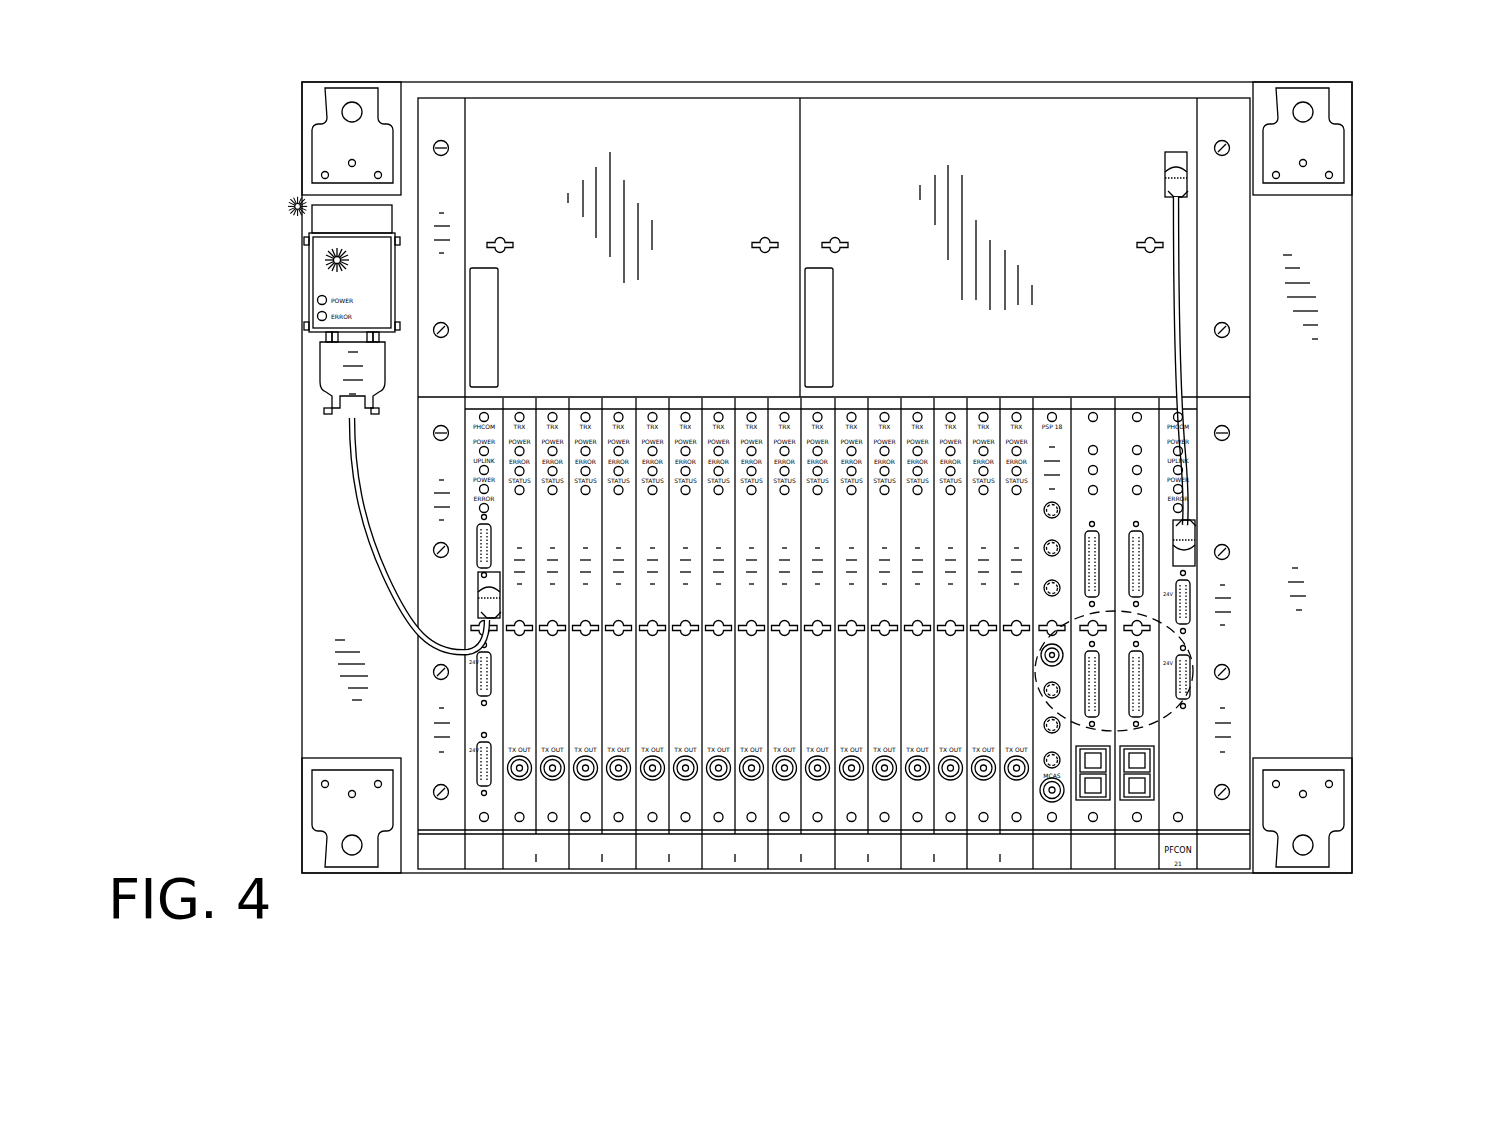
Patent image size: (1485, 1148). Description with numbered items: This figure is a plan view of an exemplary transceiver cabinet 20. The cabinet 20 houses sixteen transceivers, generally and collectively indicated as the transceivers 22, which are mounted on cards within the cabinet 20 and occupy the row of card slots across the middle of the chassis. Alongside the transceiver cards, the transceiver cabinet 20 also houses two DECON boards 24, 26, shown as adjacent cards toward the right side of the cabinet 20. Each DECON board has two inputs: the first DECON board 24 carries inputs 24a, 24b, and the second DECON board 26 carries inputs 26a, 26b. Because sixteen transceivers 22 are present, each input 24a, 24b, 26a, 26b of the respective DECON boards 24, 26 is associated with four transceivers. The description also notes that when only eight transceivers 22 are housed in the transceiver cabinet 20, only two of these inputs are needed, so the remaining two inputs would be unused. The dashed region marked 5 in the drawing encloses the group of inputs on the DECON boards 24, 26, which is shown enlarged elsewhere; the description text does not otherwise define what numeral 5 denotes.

The transceiver cabinet 20 is at (1352, 209).
The transceivers 22 is at (1033, 878).
The DECON board 24 is at (1244, 633).
The DECON board 26 is at (1272, 660).
The input 24a is at (1096, 531).
The input 24b is at (1097, 651).
The input 26a is at (1143, 558).
The input 26b is at (1143, 663).
The connector group (circled region) 5 is at (1193, 718).